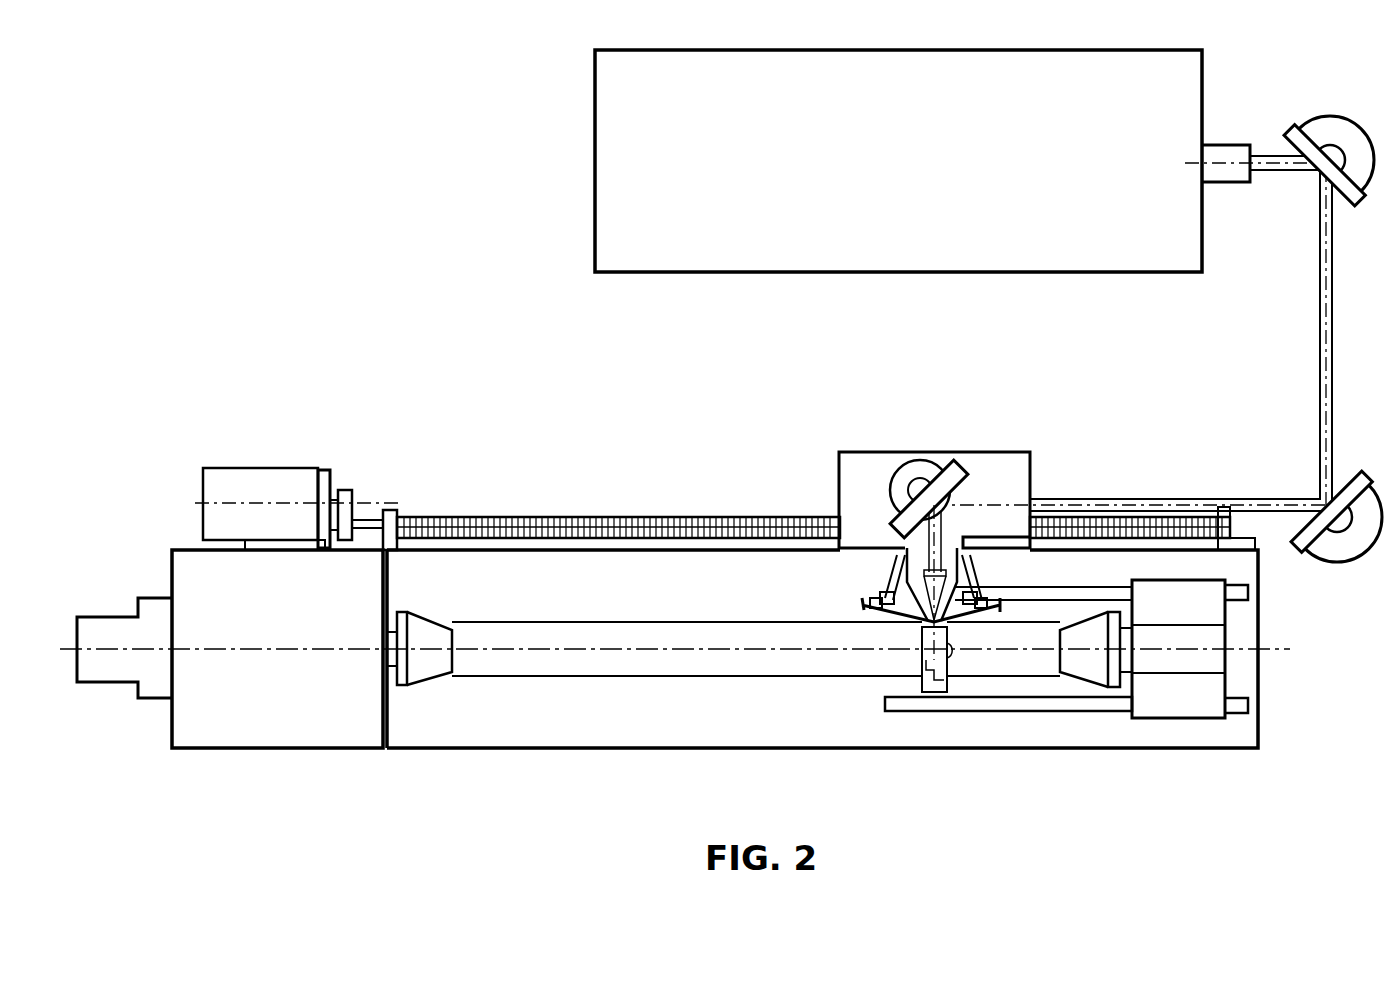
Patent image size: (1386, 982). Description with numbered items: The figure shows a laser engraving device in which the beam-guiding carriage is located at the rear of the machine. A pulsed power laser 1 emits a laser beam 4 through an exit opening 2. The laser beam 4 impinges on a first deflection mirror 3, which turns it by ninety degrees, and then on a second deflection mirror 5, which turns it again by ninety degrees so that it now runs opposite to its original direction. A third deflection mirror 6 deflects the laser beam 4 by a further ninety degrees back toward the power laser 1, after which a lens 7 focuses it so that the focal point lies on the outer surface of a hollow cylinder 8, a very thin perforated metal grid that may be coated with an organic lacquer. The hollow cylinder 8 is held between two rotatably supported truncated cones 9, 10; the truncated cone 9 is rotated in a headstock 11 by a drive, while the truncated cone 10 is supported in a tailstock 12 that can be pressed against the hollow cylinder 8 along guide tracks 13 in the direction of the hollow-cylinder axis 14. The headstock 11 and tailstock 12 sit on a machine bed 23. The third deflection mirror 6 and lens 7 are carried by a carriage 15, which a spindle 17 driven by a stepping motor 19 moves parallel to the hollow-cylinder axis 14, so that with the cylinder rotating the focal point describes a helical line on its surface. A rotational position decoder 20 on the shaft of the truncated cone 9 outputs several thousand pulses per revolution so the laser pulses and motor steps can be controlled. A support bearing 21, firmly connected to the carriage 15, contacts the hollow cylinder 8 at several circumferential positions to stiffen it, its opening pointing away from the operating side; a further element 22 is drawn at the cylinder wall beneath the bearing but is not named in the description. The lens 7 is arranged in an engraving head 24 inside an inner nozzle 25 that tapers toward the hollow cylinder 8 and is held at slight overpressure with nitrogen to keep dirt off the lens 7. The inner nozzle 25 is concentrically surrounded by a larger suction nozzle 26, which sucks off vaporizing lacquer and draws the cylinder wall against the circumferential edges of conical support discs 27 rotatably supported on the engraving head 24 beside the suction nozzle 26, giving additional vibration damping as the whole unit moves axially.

The power laser 1 is at (884, 133).
The exit opening 2 is at (1227, 165).
The first deflection mirror 3 is at (1340, 140).
The laser beam 4 is at (1273, 168).
The second deflection mirror 5 is at (1335, 530).
The third deflection mirror 6 is at (905, 470).
The lens 7 is at (958, 540).
The hollow cylinder 8 is at (590, 680).
The truncated cone 9 is at (415, 690).
The truncated cone 10 is at (1117, 690).
The headstock 11 is at (288, 597).
The tailstock 12 is at (1175, 695).
The guide tracks 13 is at (1085, 703).
The hollow-cylinder axis 14 is at (1262, 660).
The carriage 15 is at (975, 455).
The spindle 17 is at (620, 517).
The stepping motor 19 is at (260, 490).
The rotational position decoder 20 is at (110, 632).
The support bearing 21 is at (905, 690).
The cut ring 22 is at (950, 690).
The machine bed 23 is at (714, 597).
The engraving head 24 is at (870, 545).
The inner nozzle 25 is at (975, 585).
The suction nozzle 26 is at (975, 612).
The support discs 27 is at (866, 606).